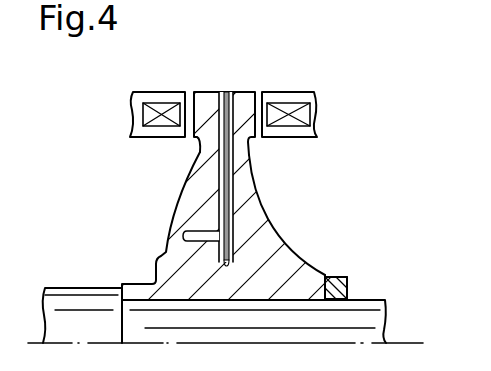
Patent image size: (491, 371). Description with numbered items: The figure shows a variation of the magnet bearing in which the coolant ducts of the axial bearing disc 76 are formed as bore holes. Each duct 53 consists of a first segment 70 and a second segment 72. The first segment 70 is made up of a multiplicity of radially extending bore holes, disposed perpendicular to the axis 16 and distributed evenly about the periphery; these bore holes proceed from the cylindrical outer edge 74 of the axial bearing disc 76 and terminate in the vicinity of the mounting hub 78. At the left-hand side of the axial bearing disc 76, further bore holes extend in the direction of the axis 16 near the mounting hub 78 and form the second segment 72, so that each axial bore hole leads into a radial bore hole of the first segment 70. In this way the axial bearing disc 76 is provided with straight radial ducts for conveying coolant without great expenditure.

The axis 16 is at (405, 343).
The duct 53 is at (232, 80).
The first segment 70 is at (236, 190).
The second segment 72 is at (180, 235).
The cylindrical outer edge 74 is at (209, 100).
The axial bearing disc 76 is at (290, 225).
The mounting hub 78 is at (303, 271).